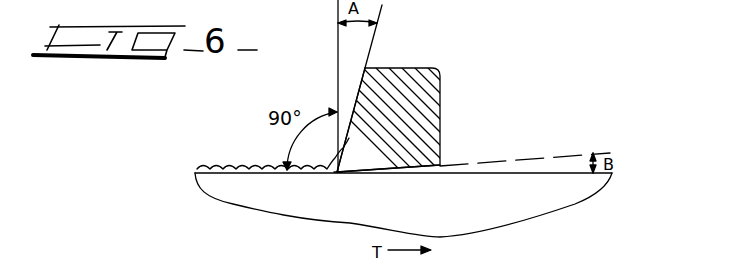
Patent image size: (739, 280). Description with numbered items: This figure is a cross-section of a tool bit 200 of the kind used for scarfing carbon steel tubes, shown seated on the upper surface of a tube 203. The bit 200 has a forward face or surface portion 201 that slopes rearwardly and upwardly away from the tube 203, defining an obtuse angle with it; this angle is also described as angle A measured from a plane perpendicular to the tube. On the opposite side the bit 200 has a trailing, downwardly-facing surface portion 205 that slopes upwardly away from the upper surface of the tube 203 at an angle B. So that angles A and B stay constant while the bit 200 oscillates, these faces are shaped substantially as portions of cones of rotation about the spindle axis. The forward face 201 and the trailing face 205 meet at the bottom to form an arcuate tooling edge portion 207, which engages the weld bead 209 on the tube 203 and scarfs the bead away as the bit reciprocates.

The tool bit 200 is at (417, 103).
The forward face 201 is at (353, 105).
The tube 203 is at (242, 195).
The trailing downwardly-facing face 205 is at (400, 170).
The arcuate tooling edge portion 207 is at (338, 172).
The weld bead 209 is at (240, 168).